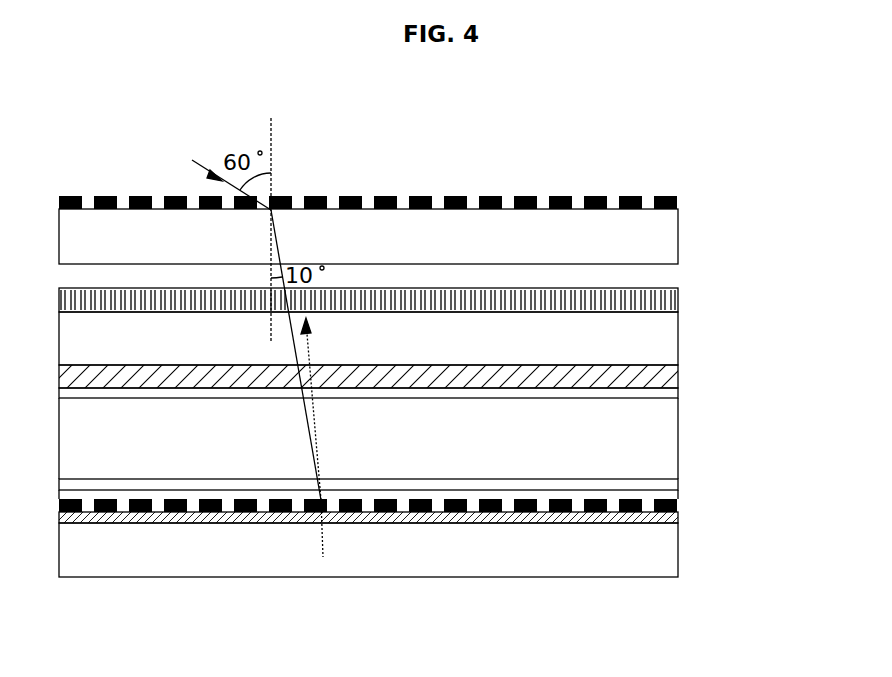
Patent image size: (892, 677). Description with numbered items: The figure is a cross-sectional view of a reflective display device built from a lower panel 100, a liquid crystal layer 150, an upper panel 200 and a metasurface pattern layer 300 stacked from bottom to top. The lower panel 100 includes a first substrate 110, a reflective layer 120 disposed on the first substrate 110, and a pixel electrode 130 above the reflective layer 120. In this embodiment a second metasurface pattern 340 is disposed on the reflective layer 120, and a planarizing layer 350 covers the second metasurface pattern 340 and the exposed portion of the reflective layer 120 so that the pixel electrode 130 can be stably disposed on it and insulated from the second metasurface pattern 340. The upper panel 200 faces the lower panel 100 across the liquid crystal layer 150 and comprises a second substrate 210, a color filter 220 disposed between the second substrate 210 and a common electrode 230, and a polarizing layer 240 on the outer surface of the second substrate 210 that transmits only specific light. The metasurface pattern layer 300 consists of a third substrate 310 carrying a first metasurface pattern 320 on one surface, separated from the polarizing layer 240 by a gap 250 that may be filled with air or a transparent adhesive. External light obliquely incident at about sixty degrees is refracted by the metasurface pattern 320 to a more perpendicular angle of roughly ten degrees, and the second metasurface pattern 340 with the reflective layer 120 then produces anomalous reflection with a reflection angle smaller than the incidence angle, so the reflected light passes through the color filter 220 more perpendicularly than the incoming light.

The lower panel 100 is at (437, 547).
The first substrate 110 is at (670, 553).
The reflective layer 120 is at (404, 559).
The pixel electrode 130 is at (670, 488).
The liquid crystal layer 150 is at (670, 440).
The upper panel 200 is at (437, 350).
The second substrate 210 is at (670, 340).
The color filter 220 is at (670, 378).
The common electrode 230 is at (404, 400).
The polarizing layer 240 is at (678, 304).
The gap 250 is at (668, 280).
The metasurface pattern layer 300 is at (437, 222).
The third substrate 310 is at (670, 237).
The metasurface pattern 320 is at (664, 198).
The second metasurface pattern 340 is at (456, 499).
The planarizing layer 350 is at (403, 513).